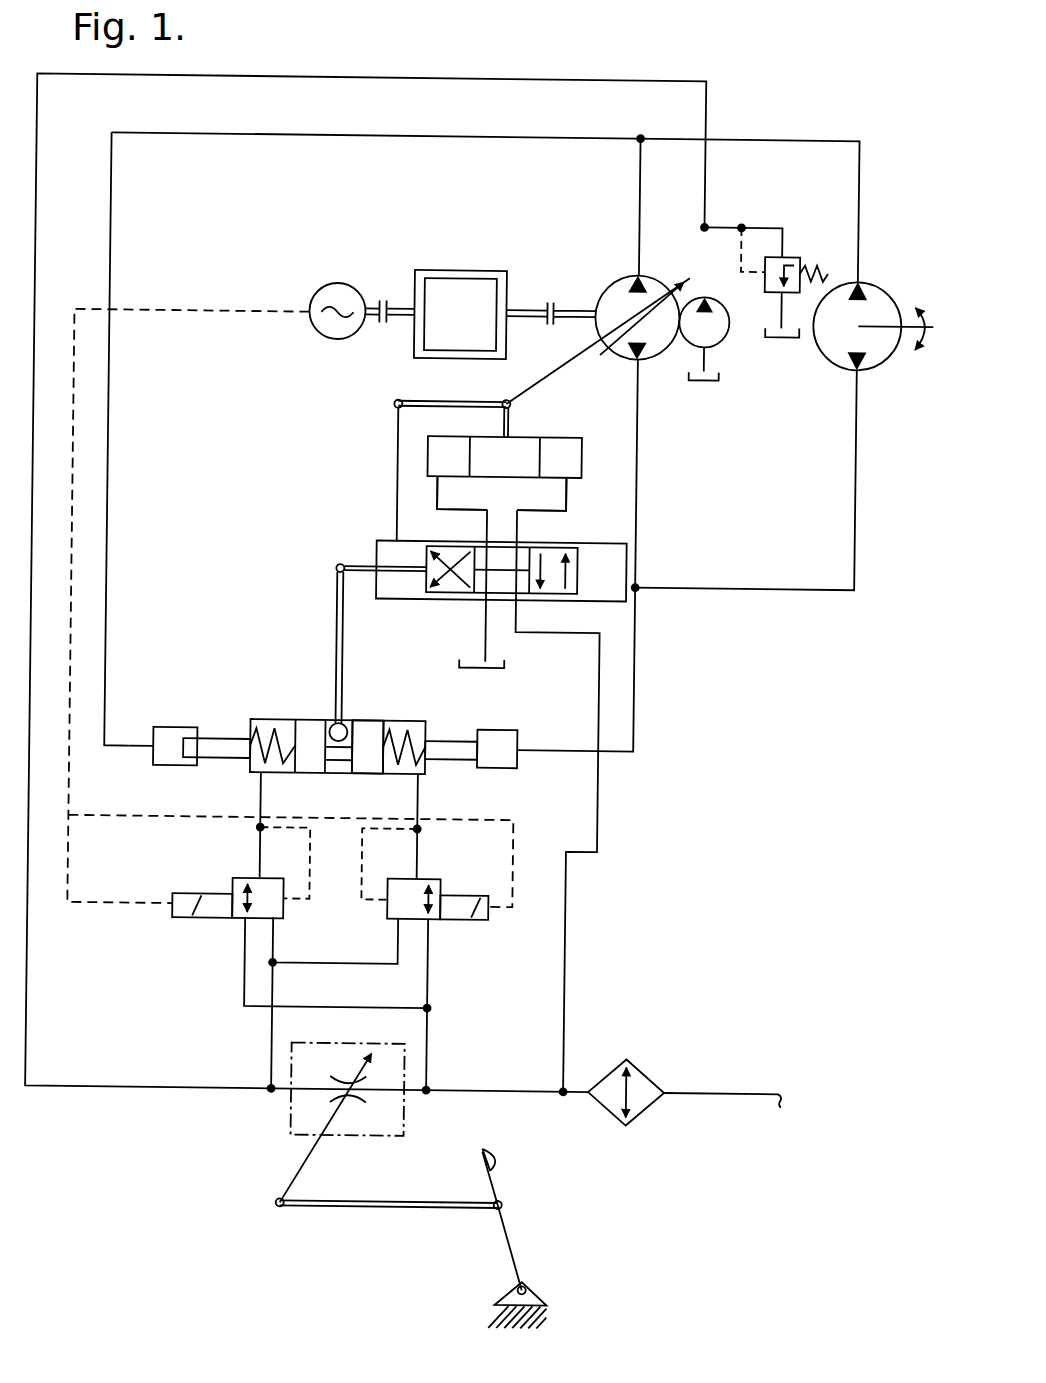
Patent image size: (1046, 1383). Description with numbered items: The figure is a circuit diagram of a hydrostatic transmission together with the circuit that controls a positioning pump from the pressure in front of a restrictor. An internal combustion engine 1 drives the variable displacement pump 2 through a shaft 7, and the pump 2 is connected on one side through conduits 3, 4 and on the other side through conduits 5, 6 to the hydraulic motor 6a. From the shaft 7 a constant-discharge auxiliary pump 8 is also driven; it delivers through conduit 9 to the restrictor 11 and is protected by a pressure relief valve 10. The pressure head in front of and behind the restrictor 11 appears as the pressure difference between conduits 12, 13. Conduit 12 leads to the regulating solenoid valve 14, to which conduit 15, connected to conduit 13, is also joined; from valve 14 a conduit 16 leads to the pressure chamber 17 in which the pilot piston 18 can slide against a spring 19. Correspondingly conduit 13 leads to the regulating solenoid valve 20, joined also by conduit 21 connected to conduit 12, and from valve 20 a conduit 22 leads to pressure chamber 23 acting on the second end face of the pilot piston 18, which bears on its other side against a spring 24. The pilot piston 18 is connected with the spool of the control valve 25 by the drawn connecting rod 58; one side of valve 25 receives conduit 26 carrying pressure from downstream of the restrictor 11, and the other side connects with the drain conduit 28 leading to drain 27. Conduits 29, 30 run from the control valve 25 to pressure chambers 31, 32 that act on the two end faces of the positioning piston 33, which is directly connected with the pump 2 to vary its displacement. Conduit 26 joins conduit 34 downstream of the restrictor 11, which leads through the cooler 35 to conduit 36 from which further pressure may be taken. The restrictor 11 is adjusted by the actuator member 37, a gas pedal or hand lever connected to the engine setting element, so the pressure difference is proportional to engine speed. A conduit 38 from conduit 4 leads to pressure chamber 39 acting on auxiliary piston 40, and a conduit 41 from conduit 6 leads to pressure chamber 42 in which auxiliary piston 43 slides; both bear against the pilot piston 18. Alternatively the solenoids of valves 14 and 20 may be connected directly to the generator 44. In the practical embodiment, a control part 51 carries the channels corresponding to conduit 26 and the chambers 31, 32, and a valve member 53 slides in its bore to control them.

The internal combustion engine 1 is at (434, 271).
The variable displacement pump 2 is at (604, 291).
The conduit 3 is at (635, 183).
The conduit 4 is at (764, 137).
The conduit 5 is at (635, 456).
The conduit 6 is at (732, 586).
The hydraulic motor 6a is at (866, 288).
The shaft 7 is at (553, 306).
The auxiliary pump 8 is at (719, 338).
The conduit 9 is at (631, 79).
The pressure relief valve 10 is at (796, 254).
The restrictor 11 is at (354, 1085).
The conduit 12 is at (277, 1038).
The conduit 13 is at (432, 1036).
The regulating solenoid valve 14 is at (242, 919).
The conduit 15 is at (358, 1011).
The conduit 16 is at (264, 809).
The pressure chamber 17 is at (266, 725).
The pilot piston 18 is at (340, 725).
The spring 19 is at (411, 727).
The regulating solenoid valve 20 is at (434, 884).
The conduit 21 is at (350, 968).
The conduit 22 is at (419, 808).
The pressure chamber 23 is at (399, 728).
The spring 24 is at (264, 763).
The control valve 25 is at (376, 543).
The conduit 26 is at (577, 633).
The drain 27 is at (498, 676).
The drain conduit 28 is at (486, 628).
The conduit 29 is at (462, 508).
The conduit 30 is at (571, 494).
The pressure chamber 31 is at (445, 441).
The pressure chamber 32 is at (566, 439).
The positioning piston 33 is at (524, 393).
The conduit 34 is at (522, 1091).
The cooler 35 is at (645, 1070).
The conduit 36 is at (719, 1092).
The actuator member 37 is at (504, 1182).
The conduit 38 is at (106, 275).
The pressure chamber 39 is at (162, 769).
The auxiliary piston 40 is at (206, 744).
The conduit 41 is at (635, 704).
The pressure chamber 42 is at (514, 767).
The auxiliary piston 43 is at (454, 757).
The generator 44 is at (320, 290).
The control part 51 is at (396, 466).
The valve member 53 is at (577, 558).
The pilot rod 58 is at (337, 612).